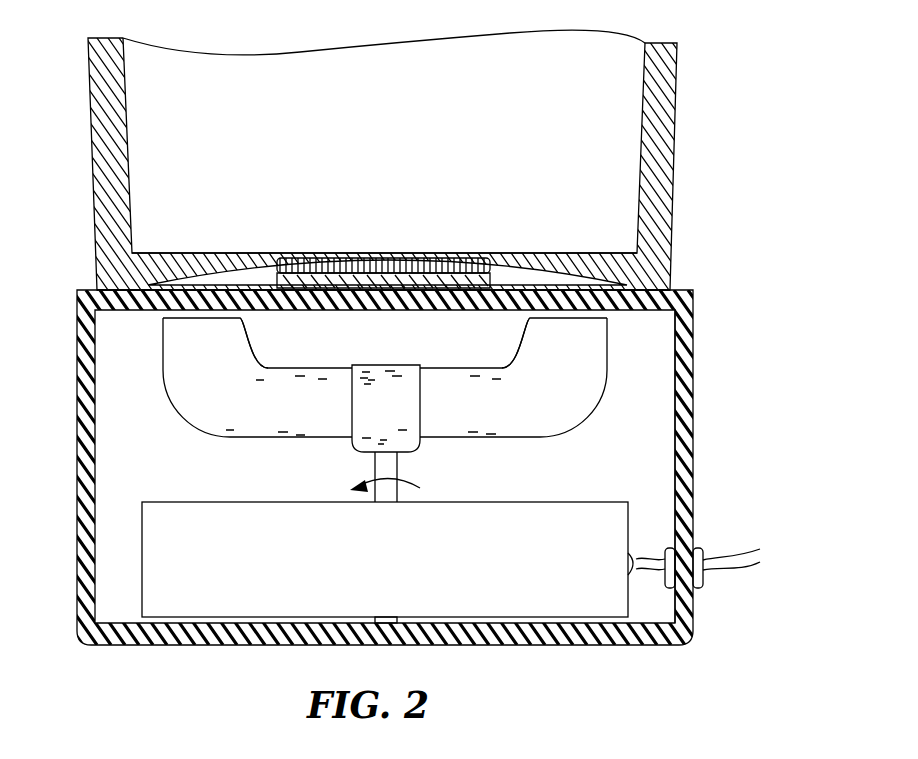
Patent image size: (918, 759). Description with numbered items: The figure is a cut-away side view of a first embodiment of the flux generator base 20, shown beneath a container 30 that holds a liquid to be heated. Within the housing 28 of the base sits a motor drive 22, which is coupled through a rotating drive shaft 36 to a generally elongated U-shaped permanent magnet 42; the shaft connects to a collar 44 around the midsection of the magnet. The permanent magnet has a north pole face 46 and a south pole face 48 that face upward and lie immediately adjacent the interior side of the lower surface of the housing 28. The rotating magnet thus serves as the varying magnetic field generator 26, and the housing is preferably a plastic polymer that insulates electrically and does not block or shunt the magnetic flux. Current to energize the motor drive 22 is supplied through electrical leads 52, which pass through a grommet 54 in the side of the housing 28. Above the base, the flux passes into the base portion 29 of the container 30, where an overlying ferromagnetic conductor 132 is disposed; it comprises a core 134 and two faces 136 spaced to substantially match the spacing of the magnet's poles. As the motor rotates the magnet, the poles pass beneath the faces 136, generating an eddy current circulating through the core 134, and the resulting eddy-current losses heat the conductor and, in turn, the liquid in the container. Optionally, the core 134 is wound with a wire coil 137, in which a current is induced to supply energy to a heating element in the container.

The flux generator base 20 is at (57, 395).
The motor drive 22 is at (242, 501).
The varying magnetic field generator 26 is at (358, 405).
The housing 28 is at (696, 463).
The base portion 29 is at (661, 279).
The container 30 is at (705, 148).
The rotating drive shaft 36 is at (398, 457).
The permanent magnet 42 is at (537, 440).
The collar 44 is at (352, 448).
The north pole face 46 is at (528, 325).
The south pole face 48 is at (243, 333).
The electrical leads 52 is at (745, 563).
The grommet 54 is at (703, 585).
The ferromagnetic conductor 132 is at (385, 227).
The core 134 is at (523, 268).
The faces 136 is at (105, 292).
The wire coil 137 is at (402, 257).